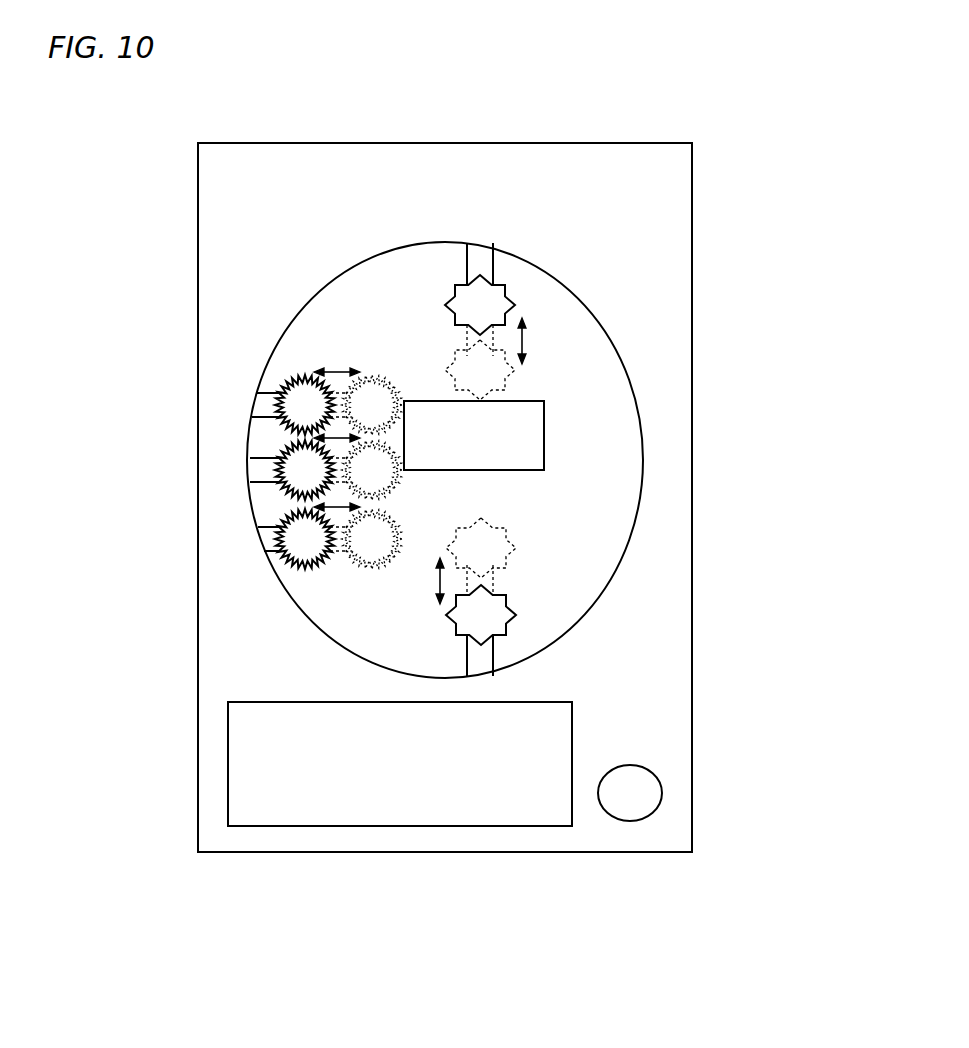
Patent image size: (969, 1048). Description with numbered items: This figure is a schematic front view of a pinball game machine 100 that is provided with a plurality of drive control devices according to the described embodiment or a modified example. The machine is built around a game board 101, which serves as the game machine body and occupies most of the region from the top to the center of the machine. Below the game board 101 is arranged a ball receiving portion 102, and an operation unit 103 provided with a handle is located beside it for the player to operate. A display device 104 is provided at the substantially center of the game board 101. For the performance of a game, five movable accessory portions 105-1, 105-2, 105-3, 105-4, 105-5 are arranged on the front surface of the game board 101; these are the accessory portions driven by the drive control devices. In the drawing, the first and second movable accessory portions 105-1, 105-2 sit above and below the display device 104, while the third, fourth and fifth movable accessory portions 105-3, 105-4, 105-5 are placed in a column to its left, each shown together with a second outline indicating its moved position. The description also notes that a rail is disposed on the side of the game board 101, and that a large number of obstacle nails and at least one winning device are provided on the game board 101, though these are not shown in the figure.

The pinball game machine 100 is at (692, 915).
The game board 101 is at (692, 343).
The ball receiving portion 102 is at (445, 826).
The operation unit 103 is at (627, 822).
The display device 104 is at (545, 437).
The movable accessory portion 105-1 is at (495, 268).
The movable accessory portion 105-2 is at (506, 640).
The movable accessory portion 105-3 is at (266, 393).
The movable accessory portion 105-4 is at (262, 458).
The movable accessory portion 105-5 is at (268, 527).